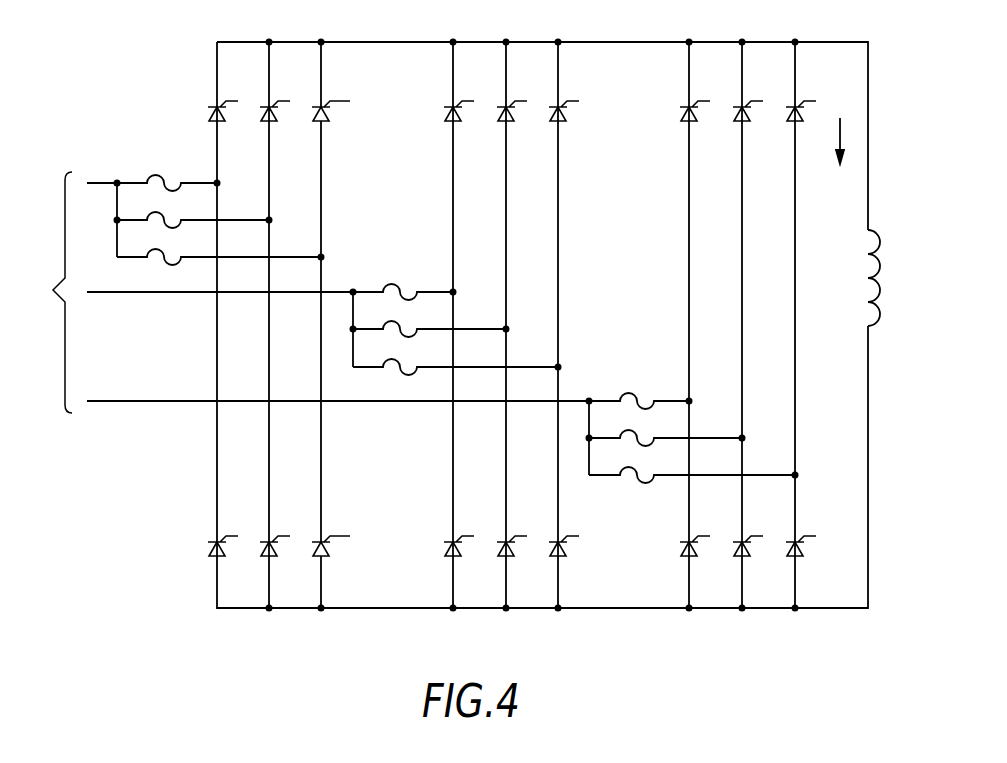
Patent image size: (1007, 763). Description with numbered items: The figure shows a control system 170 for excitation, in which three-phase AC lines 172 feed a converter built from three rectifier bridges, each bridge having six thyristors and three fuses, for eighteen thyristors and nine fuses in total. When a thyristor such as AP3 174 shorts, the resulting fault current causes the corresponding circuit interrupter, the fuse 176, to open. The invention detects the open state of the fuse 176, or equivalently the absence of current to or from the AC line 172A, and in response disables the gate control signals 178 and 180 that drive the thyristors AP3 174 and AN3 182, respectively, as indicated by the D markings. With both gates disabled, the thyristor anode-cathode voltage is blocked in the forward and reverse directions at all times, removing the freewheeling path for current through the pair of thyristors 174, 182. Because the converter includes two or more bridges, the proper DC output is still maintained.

The control system 170 is at (632, 654).
The three-phase AC lines 172 is at (303, 292).
The AC line 172A is at (98, 183).
The thyristor AP3 174 is at (323, 122).
The fuse 176 is at (162, 268).
The gate control signal 178 is at (333, 99).
The gate control signal 180 is at (333, 533).
The thyristor AN3 182 is at (323, 556).